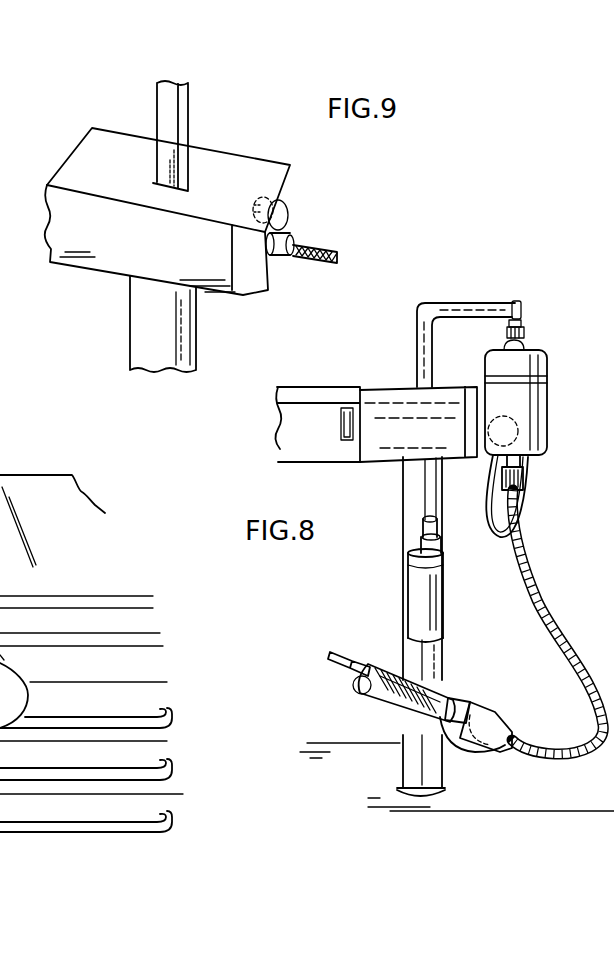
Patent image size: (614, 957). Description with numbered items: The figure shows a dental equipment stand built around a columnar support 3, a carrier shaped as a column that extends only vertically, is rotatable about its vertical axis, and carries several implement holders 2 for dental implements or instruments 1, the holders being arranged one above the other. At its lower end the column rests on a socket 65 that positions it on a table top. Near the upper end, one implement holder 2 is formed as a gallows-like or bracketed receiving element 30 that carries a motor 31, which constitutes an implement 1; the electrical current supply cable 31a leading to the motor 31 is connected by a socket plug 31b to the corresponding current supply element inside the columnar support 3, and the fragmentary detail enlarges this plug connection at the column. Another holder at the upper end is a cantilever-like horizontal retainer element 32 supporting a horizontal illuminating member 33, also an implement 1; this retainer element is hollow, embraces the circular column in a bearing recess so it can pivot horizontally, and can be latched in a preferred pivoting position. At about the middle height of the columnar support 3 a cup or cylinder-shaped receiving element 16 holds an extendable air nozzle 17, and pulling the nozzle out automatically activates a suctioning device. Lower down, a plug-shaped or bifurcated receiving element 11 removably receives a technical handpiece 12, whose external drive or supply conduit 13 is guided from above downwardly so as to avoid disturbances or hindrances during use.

In FIG. 8, the dental implement 1 is at (549, 352).
In FIG. 9, the implement holder 2 is at (191, 96).
In FIG. 8, the implement holder 2 is at (444, 298).
In FIG. 9, the columnar support 3 is at (128, 349).
In FIG. 8, the columnar support 3 is at (400, 478).
In FIG. 8, the bifurcated receiving element 11 is at (402, 750).
In FIG. 8, the technical handpiece 12 is at (407, 678).
In FIG. 8, the supply conduit 13 is at (543, 593).
In FIG. 8, the cylinder-shaped receiving element 16 is at (409, 620).
In FIG. 8, the air nozzle 17 is at (423, 523).
In FIG. 9, the bracketed receiving element 30 is at (170, 128).
In FIG. 8, the bracketed receiving element 30 is at (483, 308).
In FIG. 8, the motor 31 is at (533, 422).
In FIG. 9, the electrical current supply cable 31a is at (326, 248).
In FIG. 8, the electrical current supply cable 31a is at (500, 538).
In FIG. 9, the socket plug 31b is at (292, 230).
In FIG. 8, the socket plug 31b is at (481, 450).
In FIG. 9, the cantilever-like retainer element 32 is at (240, 162).
In FIG. 8, the cantilever-like retainer element 32 is at (395, 387).
In FIG. 8, the illuminating member 33 is at (338, 392).
In FIG. 8, the socket 65 is at (441, 789).